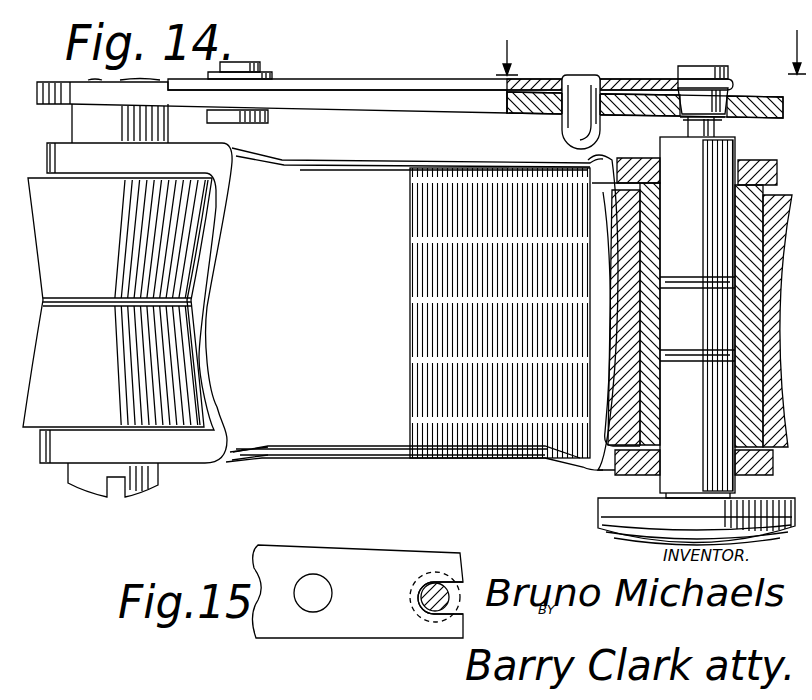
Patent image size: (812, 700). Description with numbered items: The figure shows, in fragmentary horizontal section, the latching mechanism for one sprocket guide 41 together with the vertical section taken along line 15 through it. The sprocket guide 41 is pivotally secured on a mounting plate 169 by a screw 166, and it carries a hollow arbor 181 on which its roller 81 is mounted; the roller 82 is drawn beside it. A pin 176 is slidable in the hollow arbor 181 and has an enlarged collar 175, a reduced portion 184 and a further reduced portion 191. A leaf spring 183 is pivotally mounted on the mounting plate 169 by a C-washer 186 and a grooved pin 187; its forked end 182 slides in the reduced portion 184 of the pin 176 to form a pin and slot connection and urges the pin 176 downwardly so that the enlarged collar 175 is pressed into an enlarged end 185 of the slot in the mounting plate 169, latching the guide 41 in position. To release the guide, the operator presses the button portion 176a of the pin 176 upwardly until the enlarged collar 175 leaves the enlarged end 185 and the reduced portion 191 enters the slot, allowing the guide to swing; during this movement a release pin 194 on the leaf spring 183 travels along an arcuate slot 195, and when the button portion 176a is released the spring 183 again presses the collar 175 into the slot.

In FIG. 14, the section line 15— 15 is at (649, 39).
In FIG. 14, the sprocket guide 41 is at (488, 288).
In FIG. 14, the roller 81 is at (620, 247).
In FIG. 14, the roller 82 is at (183, 258).
In FIG. 14, the screw 166 is at (143, 489).
In FIG. 14, the mounting plate 169 is at (352, 100).
In FIG. 14, the enlarged collar 175 is at (732, 100).
In FIG. 14, the pin 176 is at (656, 481).
In FIG. 14, the button portion 176a is at (601, 518).
In FIG. 14, the hollow arbor 181 is at (643, 352).
In FIG. 14, the forked end 182 is at (731, 80).
In FIG. 15, the forked end 182 is at (418, 563).
In FIG. 14, the leaf spring 183 is at (636, 79).
In FIG. 15, the leaf spring 183 is at (357, 558).
In FIG. 14, the reduced portion 184 is at (705, 77).
In FIG. 15, the reduced portion 184 is at (428, 612).
In FIG. 14, the enlarged end 185 is at (681, 114).
In FIG. 14, the C-washer 186 is at (270, 77).
In FIG. 14, the grooved pin 187 is at (254, 62).
In FIG. 14, the reduced portion 191 is at (714, 132).
In FIG. 14, the release pin 194 is at (562, 128).
In FIG. 15, the release pin 194 is at (311, 610).
In FIG. 14, the arcuate slot 195 is at (562, 86).